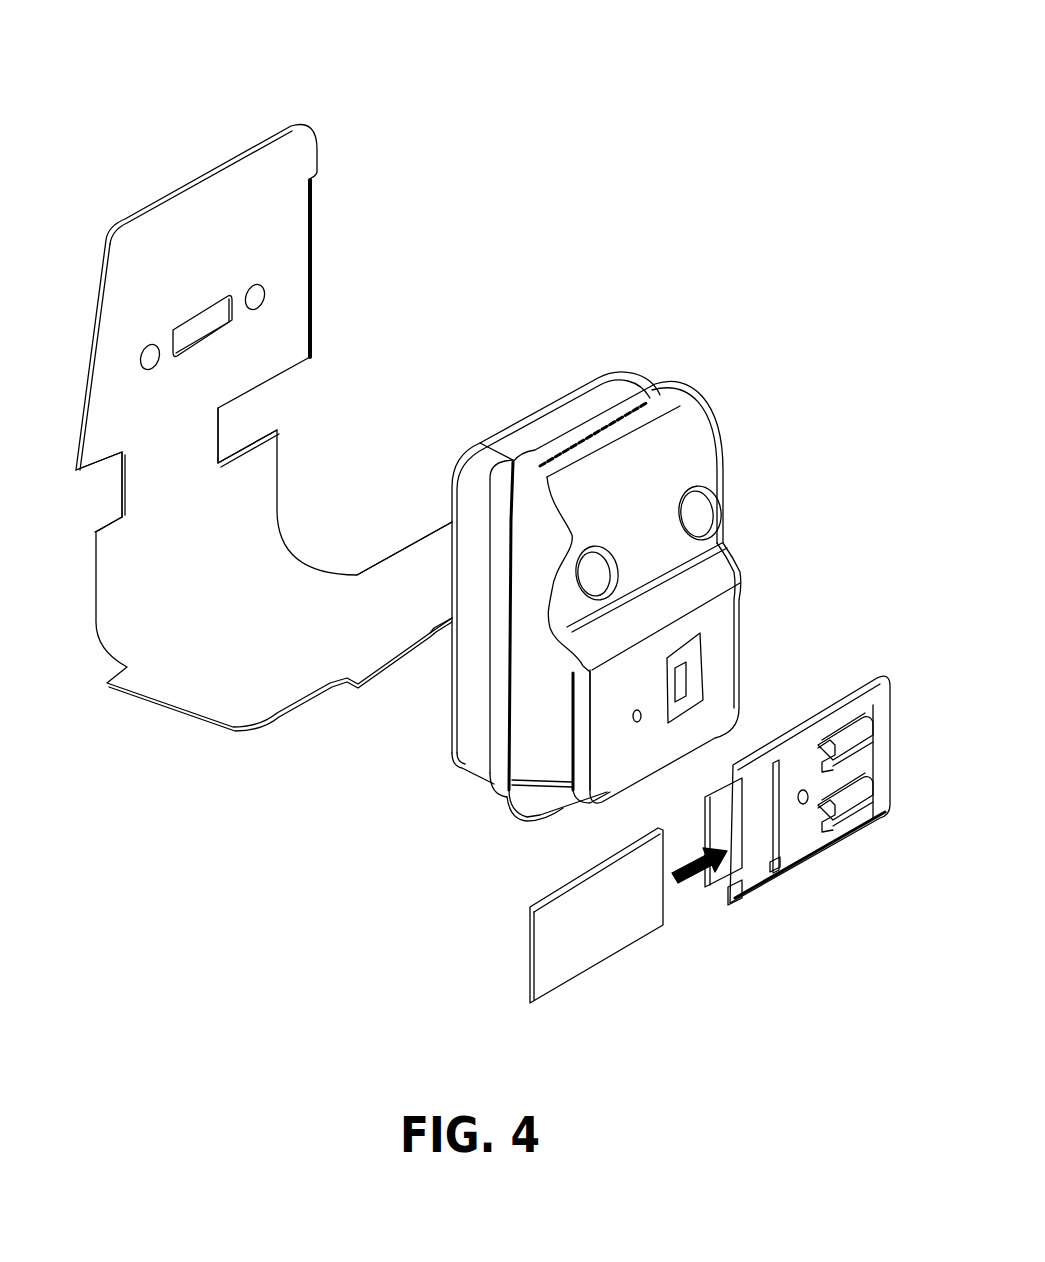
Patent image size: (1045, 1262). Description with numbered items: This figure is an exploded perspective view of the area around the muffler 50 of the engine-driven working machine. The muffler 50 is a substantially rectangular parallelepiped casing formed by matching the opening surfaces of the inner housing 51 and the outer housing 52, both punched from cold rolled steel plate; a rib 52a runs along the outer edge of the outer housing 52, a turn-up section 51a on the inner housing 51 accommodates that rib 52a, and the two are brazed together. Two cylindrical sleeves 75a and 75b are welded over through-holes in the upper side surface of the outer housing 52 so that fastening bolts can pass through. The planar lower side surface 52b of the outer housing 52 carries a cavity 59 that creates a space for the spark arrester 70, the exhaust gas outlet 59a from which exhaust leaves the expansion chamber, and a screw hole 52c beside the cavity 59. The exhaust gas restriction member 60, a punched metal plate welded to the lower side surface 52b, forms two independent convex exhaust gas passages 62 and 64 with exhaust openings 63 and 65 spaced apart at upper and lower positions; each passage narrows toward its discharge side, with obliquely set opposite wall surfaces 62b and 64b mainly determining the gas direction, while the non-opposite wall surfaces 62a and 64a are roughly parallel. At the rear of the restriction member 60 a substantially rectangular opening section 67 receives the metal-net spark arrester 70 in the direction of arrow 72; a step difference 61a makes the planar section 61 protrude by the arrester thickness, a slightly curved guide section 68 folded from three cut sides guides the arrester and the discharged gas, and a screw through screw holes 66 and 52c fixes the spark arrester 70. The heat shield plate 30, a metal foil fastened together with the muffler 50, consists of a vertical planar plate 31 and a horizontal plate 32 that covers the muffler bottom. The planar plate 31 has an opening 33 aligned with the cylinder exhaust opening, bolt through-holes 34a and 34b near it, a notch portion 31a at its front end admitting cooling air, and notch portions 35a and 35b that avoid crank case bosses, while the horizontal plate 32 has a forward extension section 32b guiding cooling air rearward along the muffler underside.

The heat shield plate 30 is at (240, 409).
The planar plate 31 is at (240, 349).
The notch portion 31a is at (318, 183).
The horizontal plate 32 is at (274, 642).
The extension section 32b is at (415, 565).
The opening 33 is at (207, 307).
The through-hole 34a is at (147, 347).
The through-hole 34b is at (265, 298).
The notch portion 35a is at (103, 492).
The notch portion 35b is at (243, 420).
The muffler 50 is at (600, 543).
The inner housing 51 is at (582, 395).
The turn-up section 51a is at (657, 383).
The outer housing 52 is at (600, 603).
The rib 52a is at (672, 402).
The lower side surface 52b is at (630, 693).
The screw hole 52c is at (640, 722).
The cavity 59 is at (692, 655).
The exhaust gas outlet 59a is at (682, 685).
The exhaust gas restriction member 60 is at (880, 690).
The planar section 61 is at (795, 780).
The step difference 61a is at (770, 863).
The exhaust gas passage 62 is at (848, 725).
The non-opposite wall surface 62a is at (860, 727).
The opposite wall surface 62b is at (872, 765).
The exhaust opening 63 is at (820, 757).
The exhaust gas passage 64 is at (877, 848).
The non-opposite wall surface 64a is at (866, 822).
The opposite wall surface 64b is at (848, 803).
The exhaust opening 65 is at (826, 820).
The screw hole 66 is at (812, 802).
The opening section 67 is at (750, 862).
The guide section 68 is at (716, 893).
The spark arrester 70 is at (588, 952).
The arrow 72 is at (700, 859).
The cylindrical sleeve 75a is at (708, 515).
The cylindrical sleeve 75b is at (606, 578).